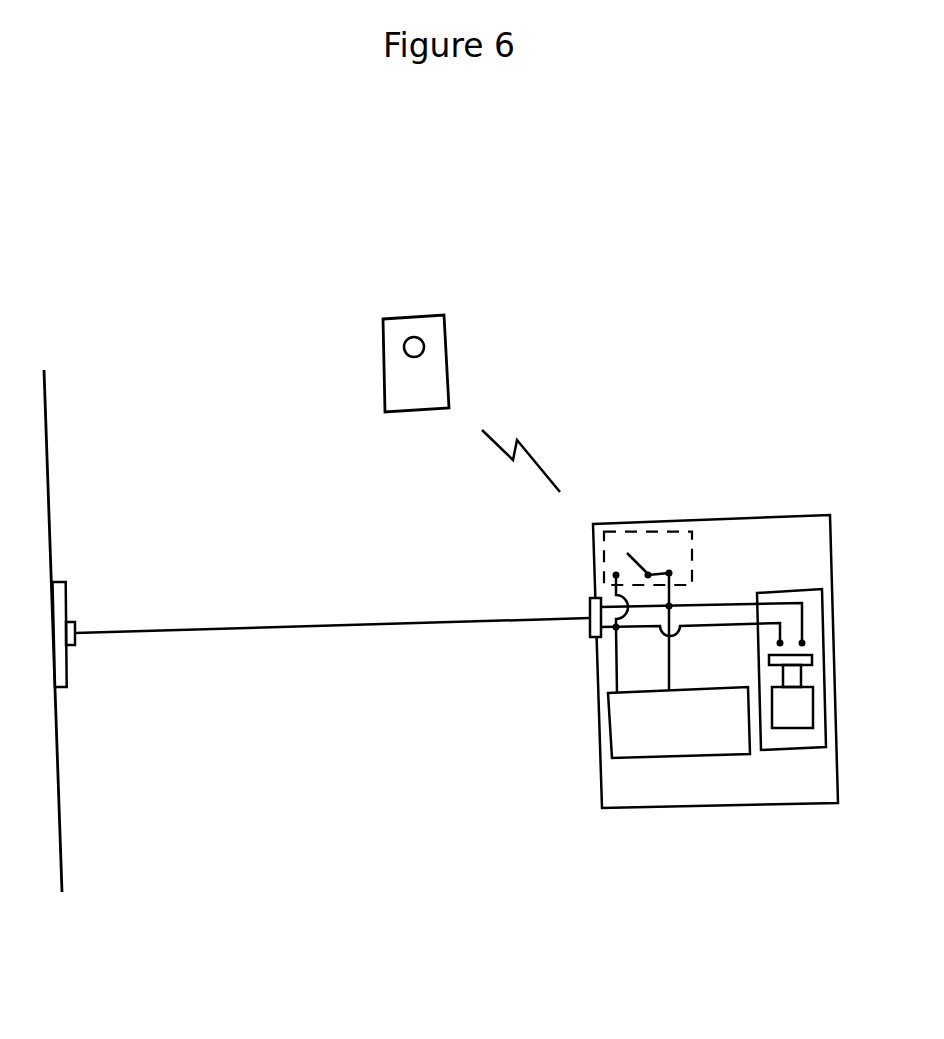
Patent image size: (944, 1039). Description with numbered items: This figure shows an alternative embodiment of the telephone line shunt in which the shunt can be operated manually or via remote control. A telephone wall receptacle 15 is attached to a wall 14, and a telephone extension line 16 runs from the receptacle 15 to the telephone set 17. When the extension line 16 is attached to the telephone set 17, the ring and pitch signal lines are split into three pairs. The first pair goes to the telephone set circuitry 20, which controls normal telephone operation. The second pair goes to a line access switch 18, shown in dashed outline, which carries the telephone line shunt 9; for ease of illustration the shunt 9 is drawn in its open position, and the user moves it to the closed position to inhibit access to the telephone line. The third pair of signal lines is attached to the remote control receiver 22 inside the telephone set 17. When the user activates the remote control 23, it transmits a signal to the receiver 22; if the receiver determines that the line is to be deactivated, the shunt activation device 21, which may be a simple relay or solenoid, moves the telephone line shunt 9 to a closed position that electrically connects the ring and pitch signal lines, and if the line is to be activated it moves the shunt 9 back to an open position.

The wall 14 is at (52, 497).
The telephone wall receptacle 15 is at (65, 602).
The telephone extension line 16 is at (342, 625).
The telephone set 17 is at (728, 518).
The line access switch 18 is at (691, 543).
The telephone line shunt 9 is at (637, 563).
The telephone set circuitry 20 is at (642, 758).
The shunt activation device 21 is at (804, 697).
The remote control receiver 22 is at (793, 590).
The remote control 23 is at (383, 390).